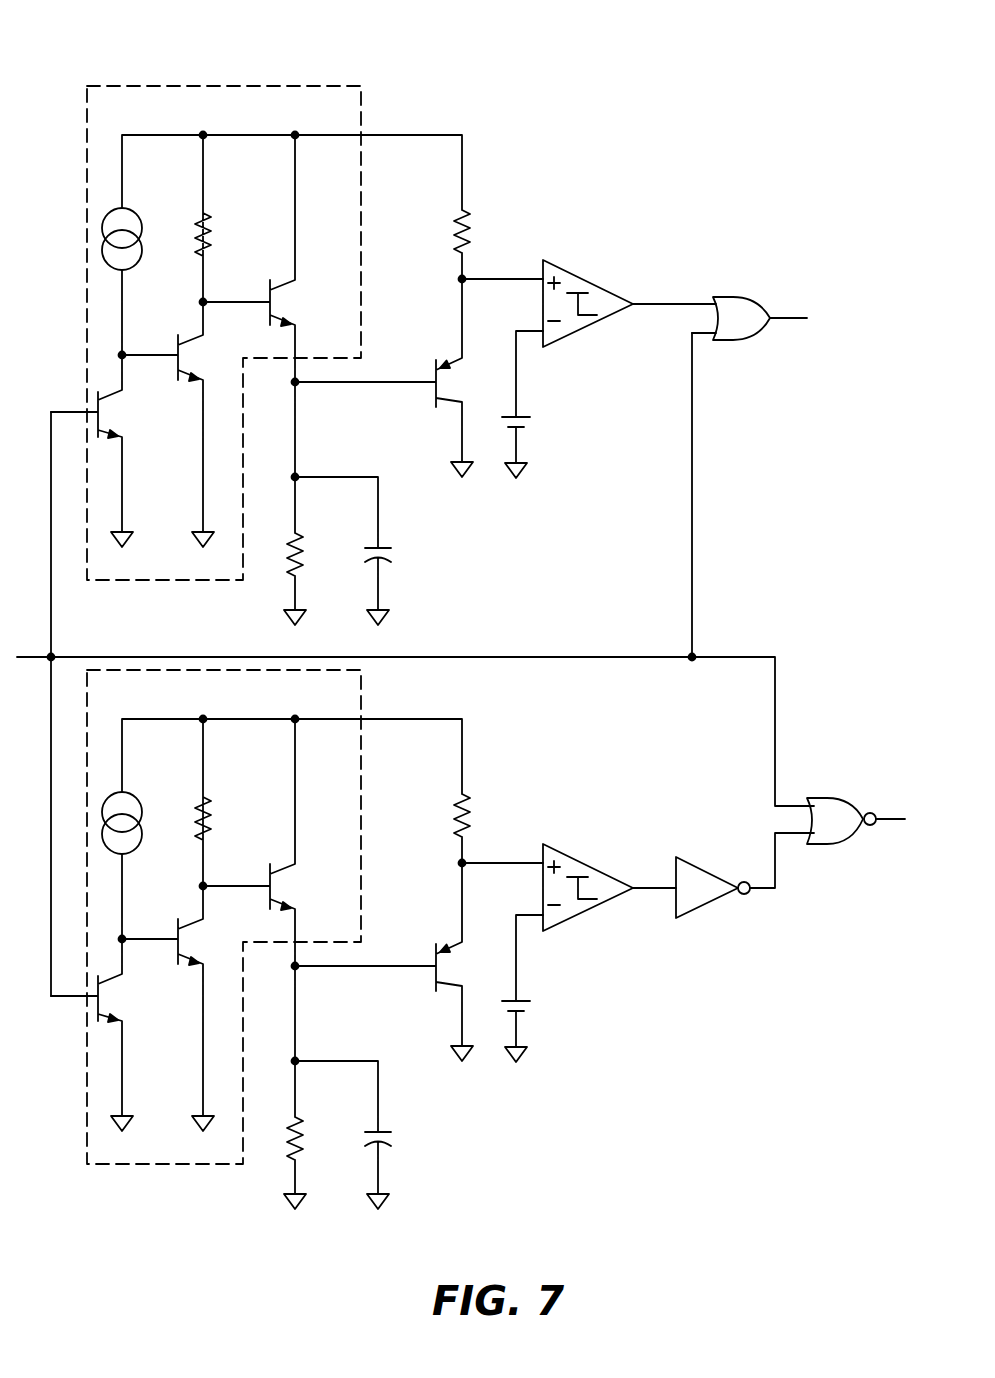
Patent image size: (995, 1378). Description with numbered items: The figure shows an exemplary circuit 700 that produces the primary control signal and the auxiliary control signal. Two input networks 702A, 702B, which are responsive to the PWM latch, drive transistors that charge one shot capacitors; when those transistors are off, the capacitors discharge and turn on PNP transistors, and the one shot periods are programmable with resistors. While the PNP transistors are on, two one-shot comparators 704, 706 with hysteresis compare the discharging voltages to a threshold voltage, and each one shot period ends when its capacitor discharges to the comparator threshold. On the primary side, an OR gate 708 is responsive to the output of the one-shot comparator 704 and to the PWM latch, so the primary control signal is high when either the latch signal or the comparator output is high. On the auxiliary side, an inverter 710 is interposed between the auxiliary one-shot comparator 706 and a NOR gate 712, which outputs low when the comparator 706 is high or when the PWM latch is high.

The circuit 700 is at (787, 69).
The input network 702A is at (240, 86).
The input network 702B is at (206, 956).
The one-shot comparator 704 is at (602, 289).
The one-shot comparator 706 is at (583, 863).
The OR gate 708 is at (727, 297).
The inverter 710 is at (715, 900).
The NOR gate 712 is at (822, 797).